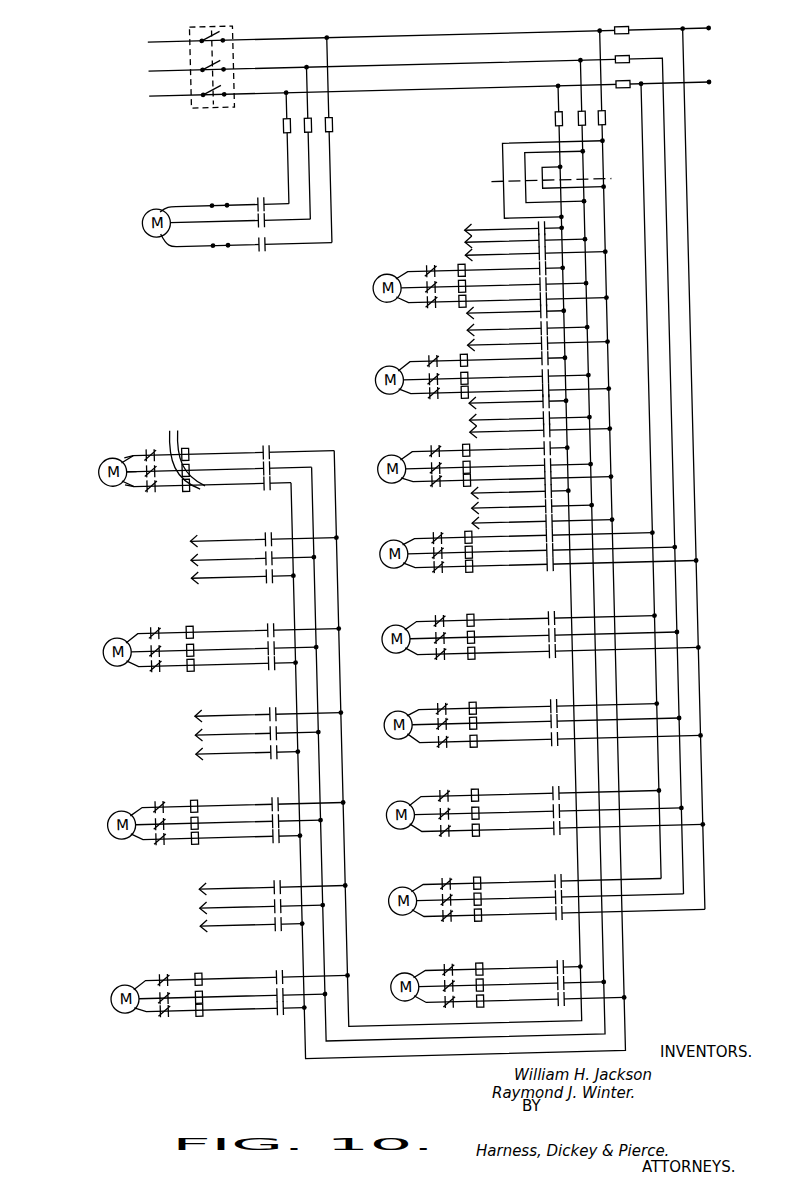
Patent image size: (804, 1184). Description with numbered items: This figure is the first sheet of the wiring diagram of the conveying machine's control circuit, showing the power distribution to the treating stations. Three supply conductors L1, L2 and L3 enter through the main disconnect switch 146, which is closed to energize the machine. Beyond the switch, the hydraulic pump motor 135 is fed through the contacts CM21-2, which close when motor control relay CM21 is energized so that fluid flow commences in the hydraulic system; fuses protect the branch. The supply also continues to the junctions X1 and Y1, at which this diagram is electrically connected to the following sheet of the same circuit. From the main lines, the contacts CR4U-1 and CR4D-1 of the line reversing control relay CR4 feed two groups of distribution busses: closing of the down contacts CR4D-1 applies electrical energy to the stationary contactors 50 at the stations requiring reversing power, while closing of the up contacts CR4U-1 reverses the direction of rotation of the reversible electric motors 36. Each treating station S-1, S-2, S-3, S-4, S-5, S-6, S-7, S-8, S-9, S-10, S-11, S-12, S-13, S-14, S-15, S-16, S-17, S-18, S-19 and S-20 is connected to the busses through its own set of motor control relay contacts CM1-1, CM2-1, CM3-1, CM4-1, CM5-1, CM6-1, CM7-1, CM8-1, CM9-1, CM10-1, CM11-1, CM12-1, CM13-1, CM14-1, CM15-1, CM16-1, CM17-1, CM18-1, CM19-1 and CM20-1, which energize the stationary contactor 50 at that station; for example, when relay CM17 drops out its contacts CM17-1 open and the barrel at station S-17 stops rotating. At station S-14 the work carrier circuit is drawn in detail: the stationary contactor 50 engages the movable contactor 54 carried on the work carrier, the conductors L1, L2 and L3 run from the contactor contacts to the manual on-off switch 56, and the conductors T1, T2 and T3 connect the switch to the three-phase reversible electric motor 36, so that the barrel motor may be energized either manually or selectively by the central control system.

The conductor L1 is at (162, 90).
The conductor L2 is at (162, 65).
The conductor L3 is at (162, 36).
The main disconnect switch 146 is at (240, 103).
The hydraulic pump motor 135 is at (152, 217).
The contacts of motor control relay CM21 CM21-2 is at (270, 250).
The up contacts of line reversing control relay CR4 CR4U-1 is at (558, 190).
The down contacts of line reversing control relay CR4 CR4D-1 is at (599, 186).
The junction X1 is at (723, 36).
The junction Y1 is at (724, 89).
The treating station S-1 is at (455, 243).
The treating station S-2 is at (372, 294).
The treating station S-3 is at (450, 331).
The treating station S-4 is at (377, 372).
The treating station S-5 is at (462, 421).
The treating station S-6 is at (382, 461).
The treating station S-7 is at (467, 510).
The treating station S-8 is at (383, 546).
The treating station S-9 is at (384, 628).
The treating station S-10 is at (386, 714).
The treating station S-11 is at (386, 800).
The treating station S-12 is at (385, 887).
The treating station S-13 is at (390, 972).
The treating station S-14 is at (169, 470).
The treating station S-15 is at (170, 565).
The treating station S-16 is at (100, 651).
The treating station S-17 is at (168, 740).
The treating station S-18 is at (100, 826).
The treating station S-19 is at (172, 906).
The treating station S-20 is at (108, 1004).
The motor control relay contacts CM1-1 is at (562, 241).
The motor control relay contacts CM2-1 is at (562, 285).
The motor control relay contacts CM3-1 is at (562, 329).
The motor control relay contacts CM4-1 is at (562, 377).
The motor control relay contacts CM5-1 is at (562, 419).
The motor control relay contacts CM6-1 is at (562, 466).
The motor control relay contacts CM7-1 is at (562, 507).
The motor control relay contacts CM8-1 is at (556, 548).
The motor control relay contacts CM9-1 is at (549, 621).
The motor control relay contacts CM10-1 is at (552, 708).
The motor control relay contacts CM11-1 is at (553, 795).
The motor control relay contacts CM12-1 is at (555, 882).
The motor control relay contacts CM13-1 is at (553, 968).
The motor control relay contacts CM14-1 is at (269, 483).
The motor control relay contacts CM15-1 is at (268, 581).
The motor control relay contacts CM16-1 is at (270, 667).
The contacts of motor control relay CM17 CM17-1 is at (273, 755).
The motor control relay contacts CM18-1 is at (272, 841).
The motor control relay contacts CM19-1 is at (277, 927).
The motor control relay contacts CM20-1 is at (275, 1012).
The three-phase reversible electric motor 36 is at (106, 454).
The conductor T1 is at (134, 449).
The conductor T2 is at (140, 460).
The conductor T3 is at (130, 479).
The movable contactor 54 is at (186, 449).
The stationary contactor 50 is at (204, 466).
The manual on-off switch 56 is at (158, 488).